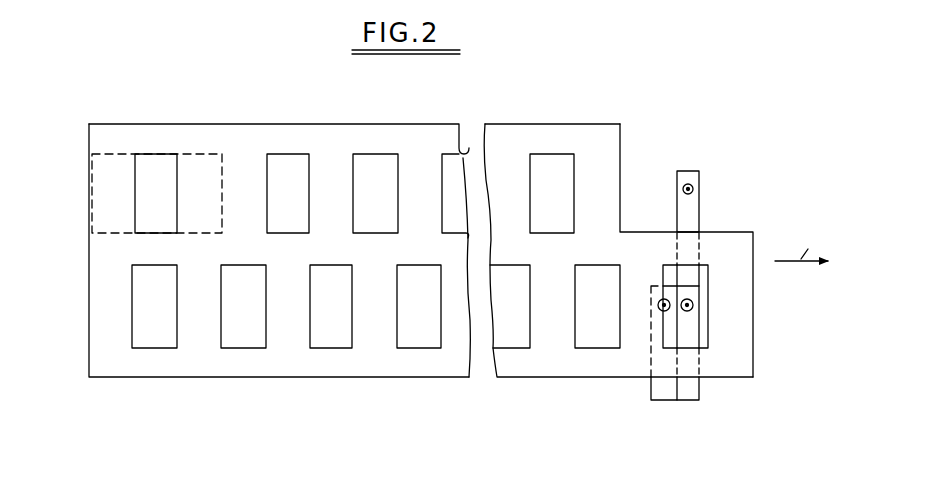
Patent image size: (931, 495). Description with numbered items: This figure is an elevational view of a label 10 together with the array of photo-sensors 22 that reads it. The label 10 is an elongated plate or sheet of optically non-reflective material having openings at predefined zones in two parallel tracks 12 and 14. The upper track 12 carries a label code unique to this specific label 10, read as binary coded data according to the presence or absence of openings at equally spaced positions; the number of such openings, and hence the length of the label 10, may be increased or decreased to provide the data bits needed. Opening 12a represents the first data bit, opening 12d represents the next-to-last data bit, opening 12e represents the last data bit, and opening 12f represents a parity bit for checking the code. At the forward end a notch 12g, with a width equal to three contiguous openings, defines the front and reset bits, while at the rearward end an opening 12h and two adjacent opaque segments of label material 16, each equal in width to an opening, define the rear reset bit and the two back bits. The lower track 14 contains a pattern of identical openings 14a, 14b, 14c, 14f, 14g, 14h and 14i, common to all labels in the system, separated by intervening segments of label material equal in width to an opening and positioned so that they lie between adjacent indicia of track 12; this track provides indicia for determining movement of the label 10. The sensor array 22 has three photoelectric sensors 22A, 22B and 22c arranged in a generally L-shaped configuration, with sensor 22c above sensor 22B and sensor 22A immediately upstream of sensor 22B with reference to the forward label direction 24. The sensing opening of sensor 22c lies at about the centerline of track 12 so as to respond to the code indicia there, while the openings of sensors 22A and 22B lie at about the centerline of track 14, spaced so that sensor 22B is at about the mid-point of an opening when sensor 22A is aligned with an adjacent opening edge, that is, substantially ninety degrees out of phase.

The label 10 is at (239, 114).
The track 12 is at (311, 161).
The opening 12a is at (554, 157).
The opening 12d is at (469, 148).
The opening 12e is at (377, 157).
The opening 12f is at (288, 156).
The notch 12g is at (622, 158).
The opening 12h is at (166, 156).
The track 14 is at (427, 343).
The opening 14a is at (706, 318).
The opening 14b is at (595, 340).
The opening 14c is at (515, 340).
The opening 14f is at (418, 340).
The opening 14g is at (331, 340).
The opening 14h is at (244, 340).
The opening 14i is at (133, 342).
The opaque segments of label material 16 is at (113, 160).
The array of photo-sensors 22 is at (738, 296).
The photoelectric sensor 22A is at (650, 394).
The photoelectric sensor 22B is at (700, 394).
The photoelectric sensor 22c is at (700, 214).
The forward label direction 24 is at (801, 242).